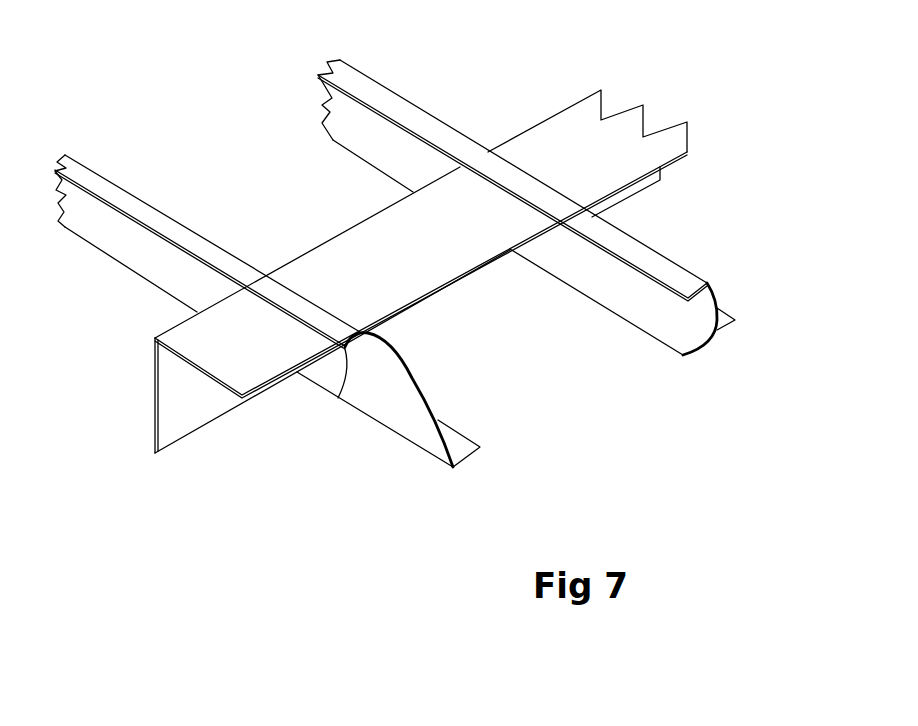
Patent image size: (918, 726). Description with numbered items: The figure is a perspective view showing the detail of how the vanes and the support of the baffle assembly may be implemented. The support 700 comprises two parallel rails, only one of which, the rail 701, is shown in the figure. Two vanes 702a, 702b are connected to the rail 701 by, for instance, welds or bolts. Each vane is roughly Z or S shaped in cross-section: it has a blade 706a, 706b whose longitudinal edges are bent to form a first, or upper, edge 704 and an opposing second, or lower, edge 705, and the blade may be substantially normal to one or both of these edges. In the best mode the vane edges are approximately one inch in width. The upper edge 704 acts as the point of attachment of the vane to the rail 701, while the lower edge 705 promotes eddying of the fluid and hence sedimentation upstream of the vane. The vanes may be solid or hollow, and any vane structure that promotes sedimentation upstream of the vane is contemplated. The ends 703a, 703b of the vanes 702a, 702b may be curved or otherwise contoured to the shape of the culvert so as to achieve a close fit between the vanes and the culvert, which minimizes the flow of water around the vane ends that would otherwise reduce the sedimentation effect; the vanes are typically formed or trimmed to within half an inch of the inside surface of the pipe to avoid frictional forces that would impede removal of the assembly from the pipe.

The support 700 is at (436, 296).
The rail 701 is at (155, 413).
The vane 702a is at (207, 242).
The vane 702b is at (512, 205).
The vane end 703a is at (417, 371).
The vane end 703b is at (721, 293).
The first or upper edge 704 is at (338, 398).
The second or lower edge 705 is at (482, 452).
The blade 706a is at (120, 263).
The blade 706b is at (584, 294).